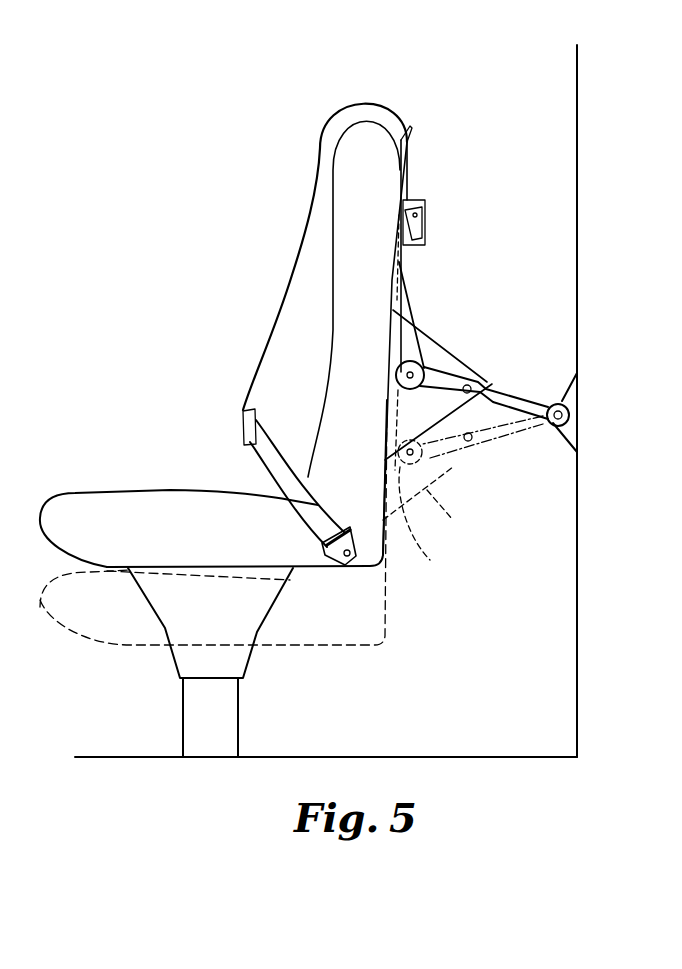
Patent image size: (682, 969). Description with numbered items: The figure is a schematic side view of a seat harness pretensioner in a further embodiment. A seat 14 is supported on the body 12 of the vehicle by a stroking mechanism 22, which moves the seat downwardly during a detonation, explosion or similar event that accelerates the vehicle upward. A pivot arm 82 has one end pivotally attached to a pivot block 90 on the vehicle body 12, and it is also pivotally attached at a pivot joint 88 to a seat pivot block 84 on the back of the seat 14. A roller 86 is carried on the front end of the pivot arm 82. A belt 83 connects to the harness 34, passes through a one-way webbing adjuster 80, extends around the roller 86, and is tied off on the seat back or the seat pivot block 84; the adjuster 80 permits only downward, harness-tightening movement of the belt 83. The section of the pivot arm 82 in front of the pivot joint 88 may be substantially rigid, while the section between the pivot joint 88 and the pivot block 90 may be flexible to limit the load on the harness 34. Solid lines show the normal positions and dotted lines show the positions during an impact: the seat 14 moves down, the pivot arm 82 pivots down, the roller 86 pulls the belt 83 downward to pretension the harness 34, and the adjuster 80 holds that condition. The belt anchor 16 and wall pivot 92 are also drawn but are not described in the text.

The vehicle body 12 is at (577, 137).
The seat 14 is at (118, 505).
The seat belt 16 is at (277, 470).
The stroking mechanism 22 is at (233, 658).
The harness 34 is at (298, 250).
The one-way webbing adjuster 80 is at (420, 223).
The pivot arm 82 is at (457, 363).
The belt 83 is at (412, 158).
The seat pivot block 84 is at (427, 290).
The roller 86 is at (405, 375).
The pivot joint 88 is at (477, 380).
The pivot block 90 is at (570, 435).
The pivot 92 is at (522, 402).